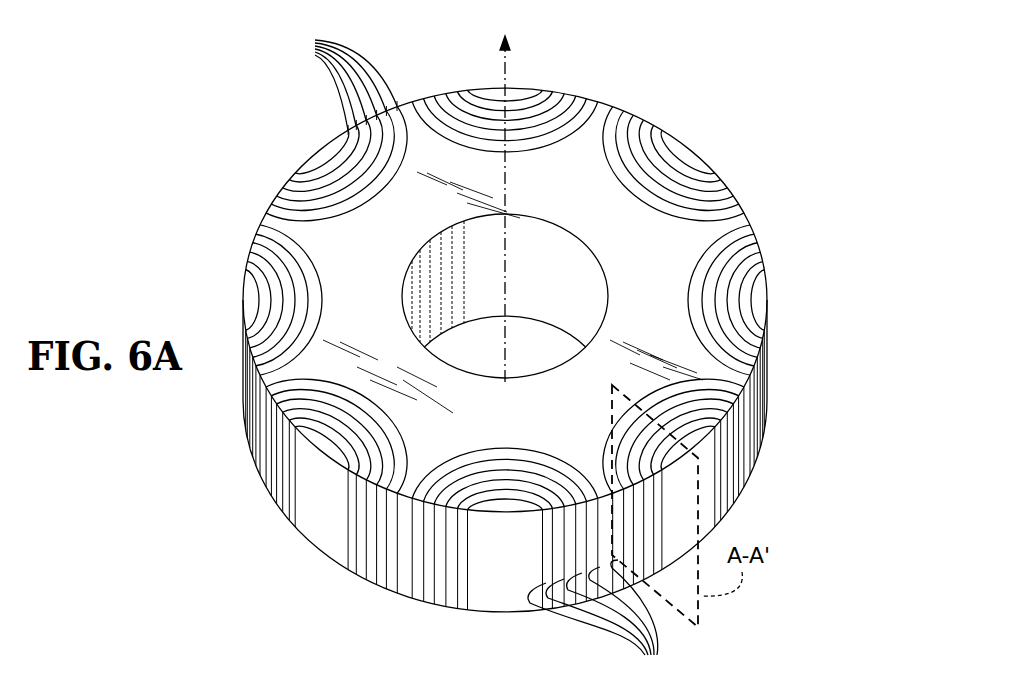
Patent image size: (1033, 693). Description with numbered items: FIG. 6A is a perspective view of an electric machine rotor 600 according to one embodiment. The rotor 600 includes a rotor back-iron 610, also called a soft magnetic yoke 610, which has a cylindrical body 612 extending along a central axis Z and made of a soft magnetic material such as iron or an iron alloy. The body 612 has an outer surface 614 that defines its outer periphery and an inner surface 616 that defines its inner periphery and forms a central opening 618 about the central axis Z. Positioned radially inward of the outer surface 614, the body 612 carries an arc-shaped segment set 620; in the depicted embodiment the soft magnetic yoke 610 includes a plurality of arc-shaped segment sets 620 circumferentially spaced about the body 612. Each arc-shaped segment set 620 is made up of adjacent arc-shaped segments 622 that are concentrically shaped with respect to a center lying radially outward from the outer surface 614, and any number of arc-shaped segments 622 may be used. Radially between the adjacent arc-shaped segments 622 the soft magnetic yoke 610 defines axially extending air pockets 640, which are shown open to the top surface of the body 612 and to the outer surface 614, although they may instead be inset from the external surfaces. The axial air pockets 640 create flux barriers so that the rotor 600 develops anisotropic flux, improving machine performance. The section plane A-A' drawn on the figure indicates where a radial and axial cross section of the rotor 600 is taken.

The electric machine rotor 600 is at (764, 66).
The rotor back-iron 610 is at (608, 100).
The cylindrical body 612 is at (572, 176).
The outer surface 614 is at (318, 525).
The inner surface 616 is at (545, 262).
The central opening 618 is at (535, 355).
The arc-shaped segment set 620 is at (772, 294).
The arc-shaped segments 622 is at (470, 358).
The axially extending air pockets 640 is at (336, 140).